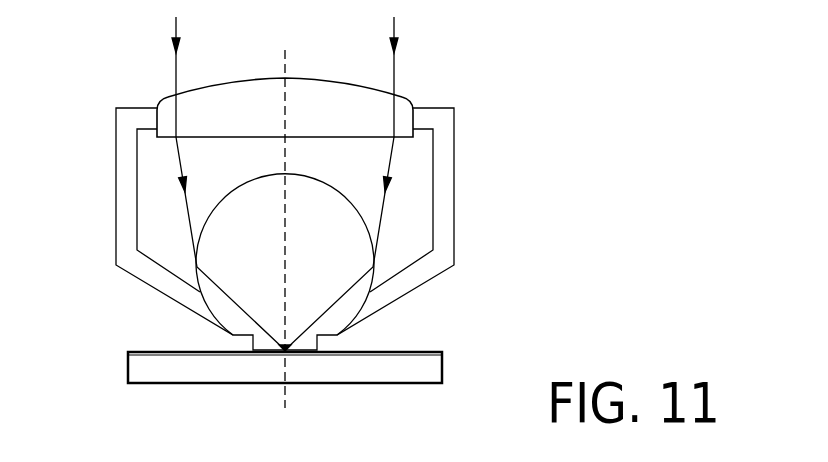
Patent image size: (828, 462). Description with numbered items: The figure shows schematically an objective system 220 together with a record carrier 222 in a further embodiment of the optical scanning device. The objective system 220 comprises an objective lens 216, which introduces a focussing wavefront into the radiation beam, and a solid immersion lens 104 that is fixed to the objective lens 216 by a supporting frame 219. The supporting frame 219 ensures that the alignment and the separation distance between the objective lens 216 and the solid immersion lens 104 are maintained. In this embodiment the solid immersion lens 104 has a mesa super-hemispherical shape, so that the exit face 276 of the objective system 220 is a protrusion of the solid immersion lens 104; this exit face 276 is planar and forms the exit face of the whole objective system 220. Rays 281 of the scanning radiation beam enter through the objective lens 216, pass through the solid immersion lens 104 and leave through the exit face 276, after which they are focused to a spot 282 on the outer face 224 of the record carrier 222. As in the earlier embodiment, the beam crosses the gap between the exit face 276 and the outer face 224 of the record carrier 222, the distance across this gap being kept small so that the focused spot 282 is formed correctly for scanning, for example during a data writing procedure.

The solid immersion lens 104 is at (333, 200).
The objective lens 216 is at (346, 96).
The supporting frame 219 is at (445, 145).
The objective system 220 is at (116, 250).
The record carrier 222 is at (192, 373).
The outer face 224 is at (150, 356).
The exit face 276 is at (263, 355).
The rays 281 is at (396, 28).
The spot 282 is at (286, 353).